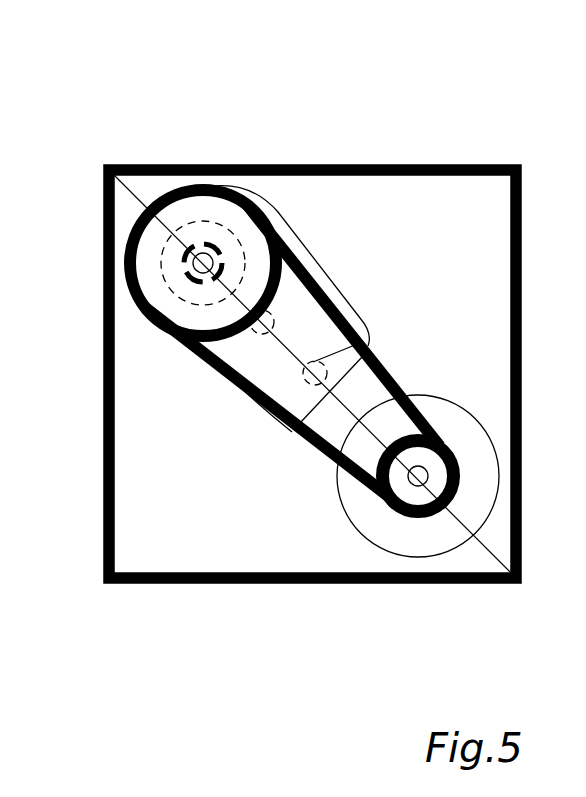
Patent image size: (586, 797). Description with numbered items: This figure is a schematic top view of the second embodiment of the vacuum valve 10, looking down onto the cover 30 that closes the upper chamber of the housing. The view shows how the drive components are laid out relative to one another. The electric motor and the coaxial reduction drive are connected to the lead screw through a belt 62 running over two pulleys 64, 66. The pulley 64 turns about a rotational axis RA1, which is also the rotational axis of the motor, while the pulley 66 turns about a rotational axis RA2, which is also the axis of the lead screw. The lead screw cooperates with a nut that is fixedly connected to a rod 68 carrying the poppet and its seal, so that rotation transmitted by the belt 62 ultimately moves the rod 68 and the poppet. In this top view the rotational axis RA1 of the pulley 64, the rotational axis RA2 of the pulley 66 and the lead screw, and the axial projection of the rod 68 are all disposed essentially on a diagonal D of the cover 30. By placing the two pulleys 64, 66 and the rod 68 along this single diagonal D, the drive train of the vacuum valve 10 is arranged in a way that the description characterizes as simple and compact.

The vacuum valve 10 is at (476, 127).
The cover element 30 is at (206, 584).
The diagonal D is at (140, 198).
The belt 62 is at (225, 373).
The pulley 66 is at (258, 258).
The rotational axis RA2 is at (208, 258).
The pulley 64 is at (442, 472).
The rotational axis RA1 is at (438, 458).
The rod 68 is at (371, 340).